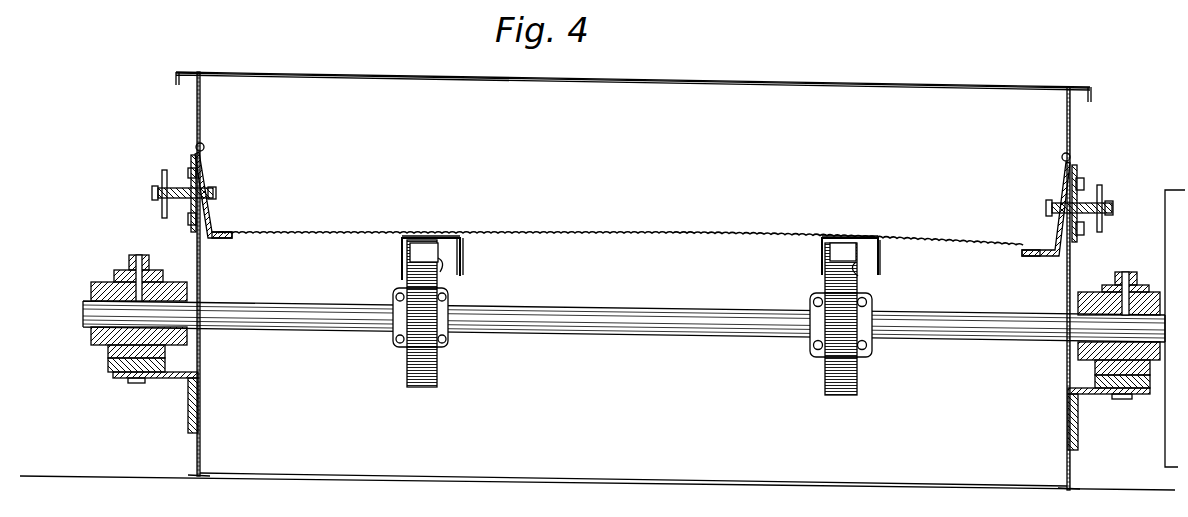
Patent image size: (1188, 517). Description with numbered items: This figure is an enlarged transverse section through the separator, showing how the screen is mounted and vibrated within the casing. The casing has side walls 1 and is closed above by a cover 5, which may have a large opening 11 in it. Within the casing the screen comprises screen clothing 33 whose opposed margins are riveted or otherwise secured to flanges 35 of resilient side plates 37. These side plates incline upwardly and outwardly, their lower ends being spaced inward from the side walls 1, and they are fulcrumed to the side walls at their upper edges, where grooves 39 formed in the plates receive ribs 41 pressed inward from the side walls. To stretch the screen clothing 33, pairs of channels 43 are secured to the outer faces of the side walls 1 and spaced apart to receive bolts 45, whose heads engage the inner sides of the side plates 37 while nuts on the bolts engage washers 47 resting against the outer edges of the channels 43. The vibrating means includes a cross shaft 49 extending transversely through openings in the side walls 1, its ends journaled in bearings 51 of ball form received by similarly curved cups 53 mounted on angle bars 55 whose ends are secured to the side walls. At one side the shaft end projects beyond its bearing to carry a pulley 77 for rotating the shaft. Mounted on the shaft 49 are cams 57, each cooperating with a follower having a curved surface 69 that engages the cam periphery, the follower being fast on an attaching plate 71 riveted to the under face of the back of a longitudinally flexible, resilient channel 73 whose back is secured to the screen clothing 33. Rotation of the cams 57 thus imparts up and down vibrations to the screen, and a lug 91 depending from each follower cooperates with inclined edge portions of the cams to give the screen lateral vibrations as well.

The side walls 1 is at (196, 252).
The cover 5 is at (822, 84).
The opening 11 is at (715, 80).
The screen clothing 33 is at (625, 232).
The flanges 35 is at (230, 240).
The side plates 37 is at (215, 216).
The grooves 39 is at (208, 148).
The ribs 41 is at (192, 148).
The channels 43 is at (184, 178).
The bolts 45 is at (160, 196).
The washers 47 is at (160, 182).
The cross shafts 49 is at (620, 309).
The bearings 51 is at (120, 338).
The cups 53 is at (120, 362).
The angle bars 55 is at (172, 380).
The cams 57 is at (405, 366).
The curved surface 69 is at (405, 246).
The attaching plate 71 is at (435, 236).
The resilient channels 73 is at (455, 243).
The pulleys 77 is at (1165, 190).
The lug 91 is at (440, 276).